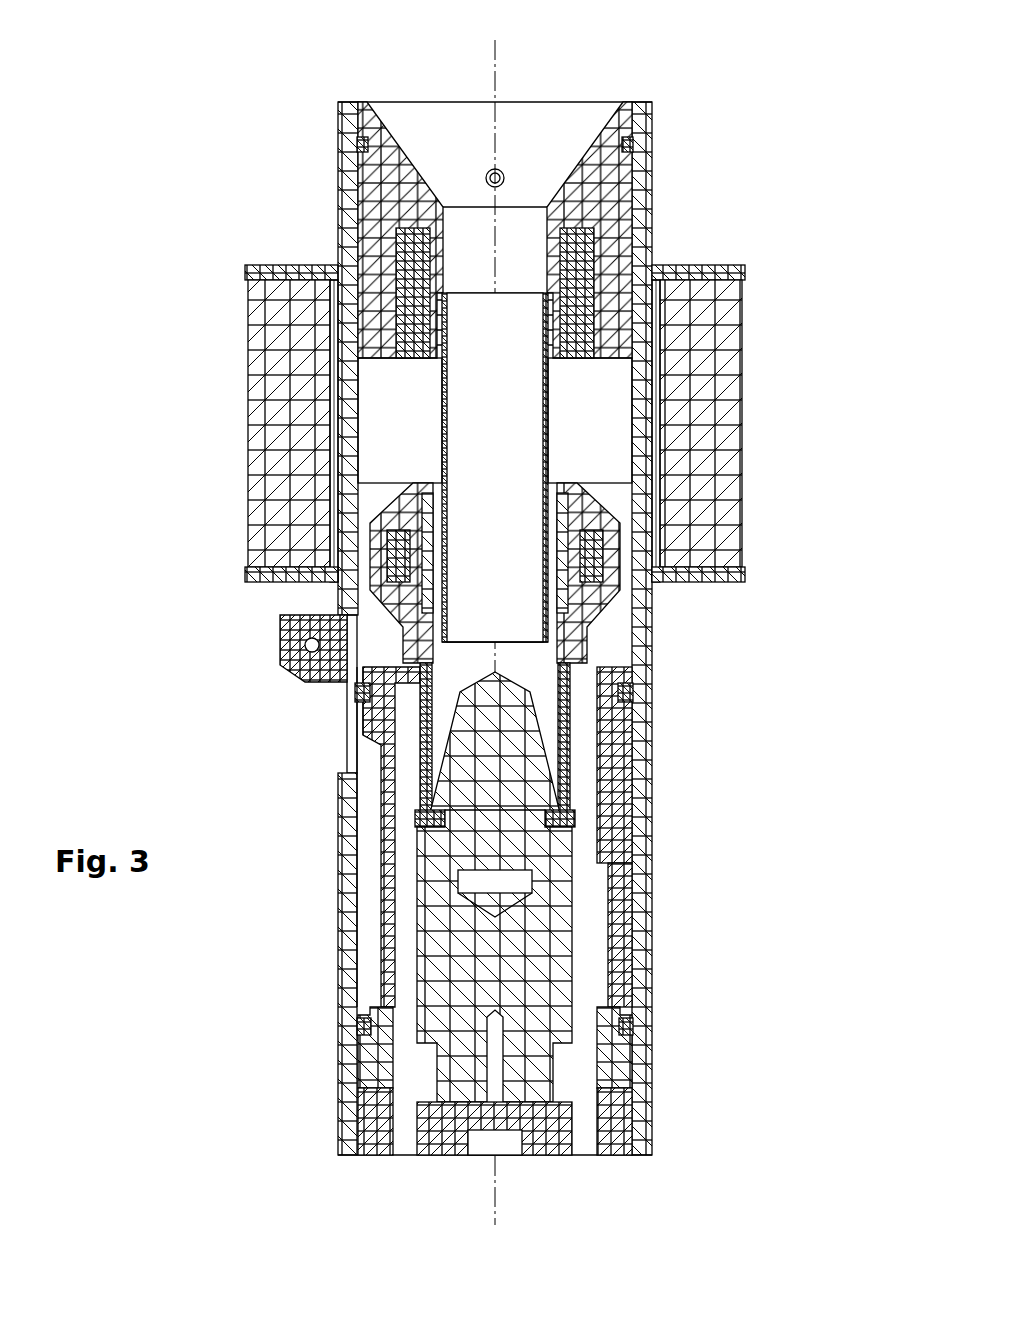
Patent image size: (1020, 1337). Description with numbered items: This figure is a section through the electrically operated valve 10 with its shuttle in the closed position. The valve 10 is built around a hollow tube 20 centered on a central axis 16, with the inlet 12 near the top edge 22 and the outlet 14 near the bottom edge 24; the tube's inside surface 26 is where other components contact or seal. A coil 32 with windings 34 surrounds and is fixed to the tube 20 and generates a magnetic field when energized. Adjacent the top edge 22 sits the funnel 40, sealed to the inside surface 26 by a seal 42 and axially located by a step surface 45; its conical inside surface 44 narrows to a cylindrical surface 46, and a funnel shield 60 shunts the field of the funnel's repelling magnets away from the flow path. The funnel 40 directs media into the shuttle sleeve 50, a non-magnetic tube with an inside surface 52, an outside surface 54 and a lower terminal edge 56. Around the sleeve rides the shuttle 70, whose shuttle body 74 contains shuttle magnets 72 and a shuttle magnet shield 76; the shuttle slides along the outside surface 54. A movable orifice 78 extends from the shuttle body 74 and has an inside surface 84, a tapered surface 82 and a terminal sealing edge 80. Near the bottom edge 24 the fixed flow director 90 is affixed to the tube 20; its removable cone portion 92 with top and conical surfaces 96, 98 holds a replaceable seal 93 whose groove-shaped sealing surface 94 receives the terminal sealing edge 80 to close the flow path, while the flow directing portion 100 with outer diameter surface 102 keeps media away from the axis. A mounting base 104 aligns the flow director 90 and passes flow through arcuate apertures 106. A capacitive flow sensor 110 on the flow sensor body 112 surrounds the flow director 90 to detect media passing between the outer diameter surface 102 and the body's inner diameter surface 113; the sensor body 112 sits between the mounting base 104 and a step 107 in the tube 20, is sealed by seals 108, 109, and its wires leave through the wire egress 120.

The electrically operated valve 10 is at (455, 626).
The inlet 12 is at (489, 589).
The outlet 14 is at (484, 933).
The central axis 16 is at (500, 1219).
The tube 20 is at (648, 190).
The top edge 22 is at (643, 102).
The bottom edge 24 is at (642, 1157).
The inside surface 26 is at (628, 420).
The coil 32 is at (475, 423).
The windings 34 is at (740, 312).
The funnel 40 is at (400, 108).
The seal 42 is at (633, 142).
The inside surface 44 is at (578, 170).
The step surface 45 is at (337, 377).
The cylindrical surface 46 is at (465, 205).
The shuttle sleeve 50 is at (437, 418).
The inside surface 52 is at (585, 262).
The outside surface 54 is at (548, 398).
The terminal edge 56 is at (467, 657).
The funnel shield 60 is at (410, 262).
The shuttle 70 is at (493, 571).
The shuttle magnets 72 is at (600, 565).
The shuttle body 74 is at (595, 588).
The shuttle magnet shield 76 is at (425, 512).
The movable orifice 78 is at (580, 723).
The terminal sealing edge 80 is at (570, 803).
The tapered surface 82 is at (555, 770).
The inside surface 84 is at (435, 716).
The fixed flow director 90 is at (578, 961).
The cone portion 92 is at (416, 747).
The replaceable seal 93 is at (420, 820).
The sealing surface 94 is at (570, 828).
The top surface 96 is at (525, 660).
The conical surface 98 is at (425, 735).
The flow directing portion 100 is at (447, 956).
The outer diameter surface 102 is at (413, 910).
The mounting base 104 is at (453, 1133).
The arcuate apertures 106 is at (405, 1143).
The step 107 is at (312, 650).
The seal 108 is at (633, 690).
The seal 109 is at (357, 1025).
The flow sensor 110 is at (612, 912).
The flow sensor body 112 is at (618, 1050).
The inner diameter surface 113 is at (597, 887).
The wire egress 120 is at (338, 738).